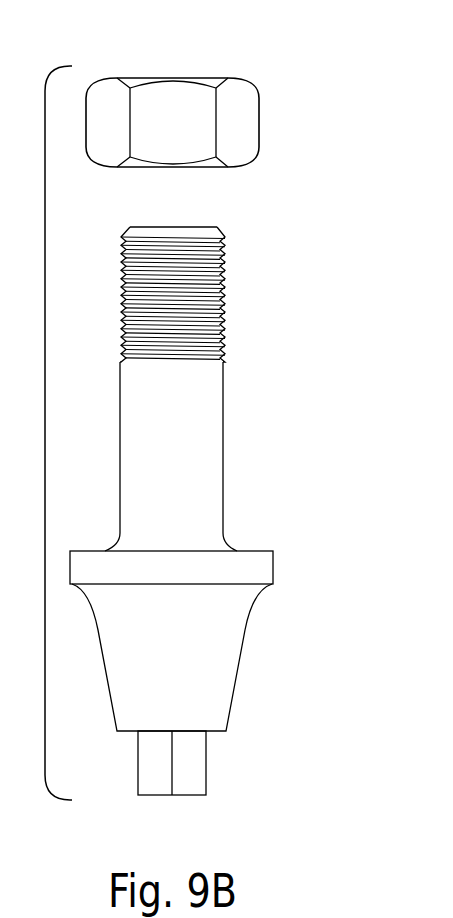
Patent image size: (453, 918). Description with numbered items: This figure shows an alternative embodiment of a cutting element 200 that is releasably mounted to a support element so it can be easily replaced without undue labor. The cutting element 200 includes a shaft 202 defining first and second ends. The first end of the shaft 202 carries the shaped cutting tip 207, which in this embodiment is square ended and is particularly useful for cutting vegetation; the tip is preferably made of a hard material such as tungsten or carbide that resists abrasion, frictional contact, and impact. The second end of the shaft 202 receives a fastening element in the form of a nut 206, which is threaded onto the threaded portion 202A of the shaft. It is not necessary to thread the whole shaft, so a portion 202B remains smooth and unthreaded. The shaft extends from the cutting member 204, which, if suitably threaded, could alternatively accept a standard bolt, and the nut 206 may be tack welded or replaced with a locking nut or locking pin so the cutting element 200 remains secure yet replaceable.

The cutting element 200 is at (322, 602).
The shaft 202 is at (317, 285).
The threaded portion of the shaft 202A is at (223, 413).
The smooth unthreaded portion of the shaft 202B is at (225, 310).
The cutting member 204 is at (258, 651).
The nut 206 is at (259, 122).
The shaped cutting tip 207 is at (206, 770).